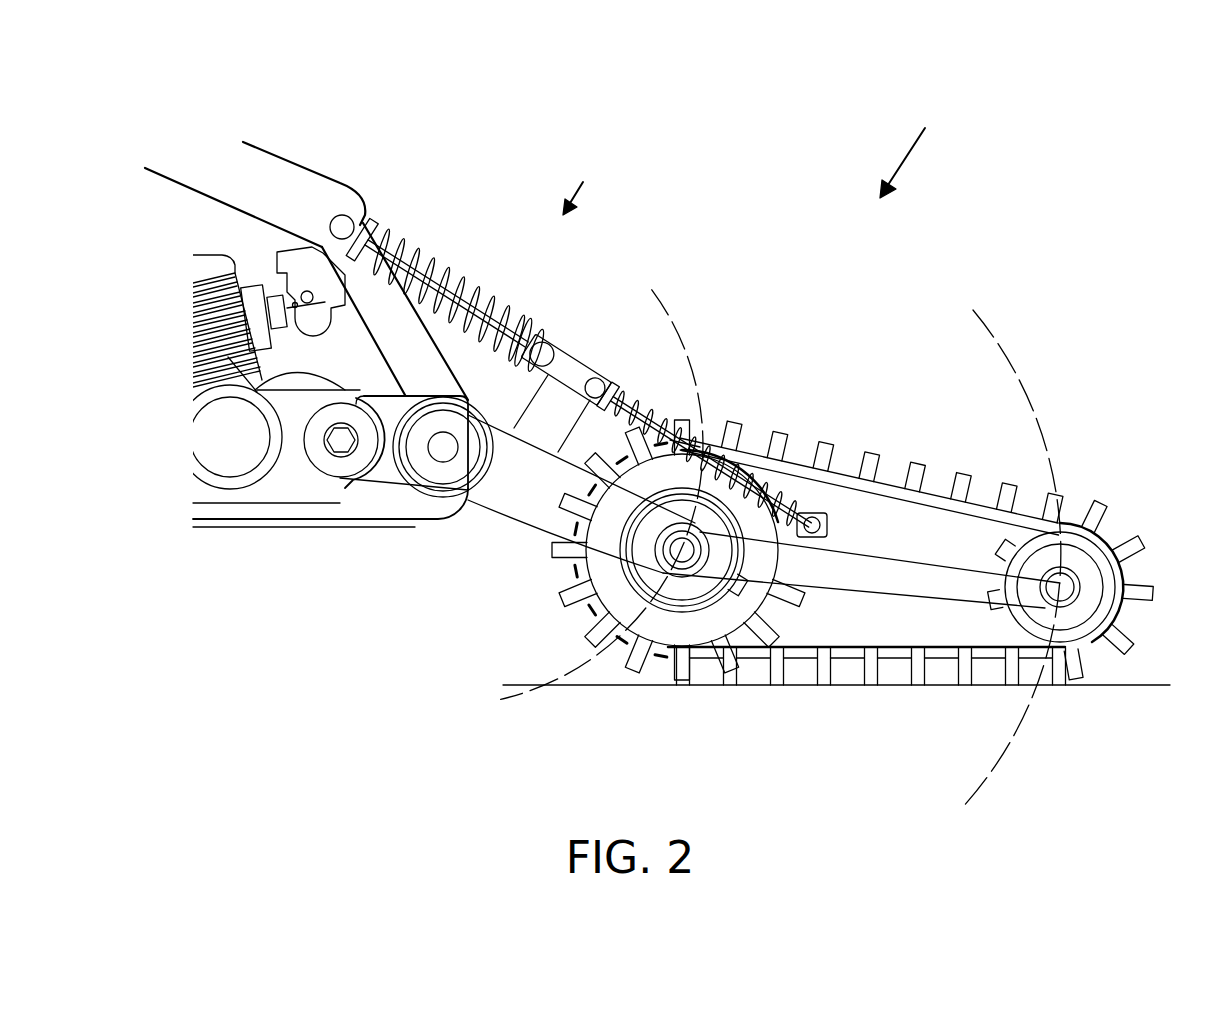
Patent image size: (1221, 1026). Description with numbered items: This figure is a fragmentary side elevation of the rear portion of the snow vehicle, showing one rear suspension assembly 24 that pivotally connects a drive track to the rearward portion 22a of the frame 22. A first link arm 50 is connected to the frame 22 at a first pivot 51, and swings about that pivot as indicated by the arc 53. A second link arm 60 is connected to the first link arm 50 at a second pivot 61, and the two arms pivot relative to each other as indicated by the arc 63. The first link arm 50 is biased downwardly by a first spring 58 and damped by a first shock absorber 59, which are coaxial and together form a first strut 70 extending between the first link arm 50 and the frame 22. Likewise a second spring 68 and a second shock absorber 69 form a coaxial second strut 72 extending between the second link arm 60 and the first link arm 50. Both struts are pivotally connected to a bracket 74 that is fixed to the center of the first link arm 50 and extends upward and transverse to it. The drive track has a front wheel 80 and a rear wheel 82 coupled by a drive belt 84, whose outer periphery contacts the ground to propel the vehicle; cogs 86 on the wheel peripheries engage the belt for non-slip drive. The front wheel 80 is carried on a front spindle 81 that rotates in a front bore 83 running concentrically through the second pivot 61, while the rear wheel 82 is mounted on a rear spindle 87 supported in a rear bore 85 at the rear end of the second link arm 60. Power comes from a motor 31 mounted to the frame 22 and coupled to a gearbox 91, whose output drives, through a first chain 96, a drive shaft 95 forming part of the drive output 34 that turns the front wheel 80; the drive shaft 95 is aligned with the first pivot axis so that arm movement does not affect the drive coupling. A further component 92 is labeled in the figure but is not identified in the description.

The rearward portion of the frame 22a is at (922, 141).
The rear suspension assembly 24 is at (587, 178).
The first strut 70 is at (378, 236).
The first spring 58 is at (467, 280).
The first shock absorber 59 is at (430, 272).
The first pivot 51 is at (443, 407).
The bracket 74 is at (586, 325).
The second strut 72 is at (613, 378).
The second spring 68 is at (725, 435).
The second shock absorber 69 is at (648, 412).
The arc 53 is at (696, 372).
The second pivot 61 is at (700, 530).
The drive belt 84 is at (843, 466).
The second link arm 60 is at (892, 563).
The arc 63 is at (1022, 380).
The rear bore 85 is at (1067, 585).
The cogs 86 is at (1010, 541).
The rear wheel 82 is at (1093, 581).
The rear spindle 87 is at (1090, 675).
The motor 31 is at (190, 355).
The gearbox 91 is at (270, 487).
The frame 22 is at (297, 512).
The idler pulley 92 is at (341, 442).
The first chain 96 is at (387, 490).
The drive output 34 is at (435, 477).
The drive shaft 95 is at (448, 454).
The first link arm 50 is at (531, 515).
The front wheel 80 is at (607, 590).
The front bore 83 is at (675, 565).
The front spindle 81 is at (690, 562).